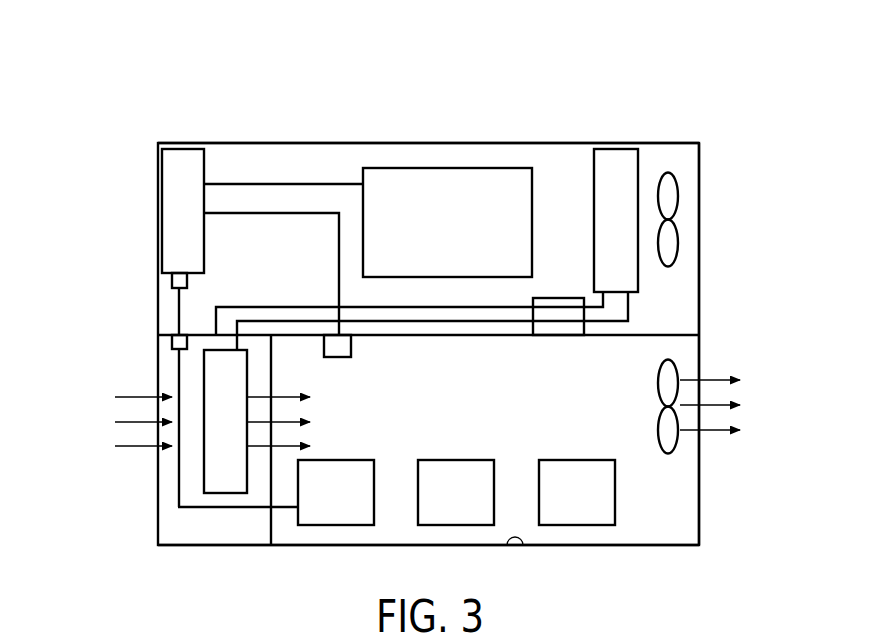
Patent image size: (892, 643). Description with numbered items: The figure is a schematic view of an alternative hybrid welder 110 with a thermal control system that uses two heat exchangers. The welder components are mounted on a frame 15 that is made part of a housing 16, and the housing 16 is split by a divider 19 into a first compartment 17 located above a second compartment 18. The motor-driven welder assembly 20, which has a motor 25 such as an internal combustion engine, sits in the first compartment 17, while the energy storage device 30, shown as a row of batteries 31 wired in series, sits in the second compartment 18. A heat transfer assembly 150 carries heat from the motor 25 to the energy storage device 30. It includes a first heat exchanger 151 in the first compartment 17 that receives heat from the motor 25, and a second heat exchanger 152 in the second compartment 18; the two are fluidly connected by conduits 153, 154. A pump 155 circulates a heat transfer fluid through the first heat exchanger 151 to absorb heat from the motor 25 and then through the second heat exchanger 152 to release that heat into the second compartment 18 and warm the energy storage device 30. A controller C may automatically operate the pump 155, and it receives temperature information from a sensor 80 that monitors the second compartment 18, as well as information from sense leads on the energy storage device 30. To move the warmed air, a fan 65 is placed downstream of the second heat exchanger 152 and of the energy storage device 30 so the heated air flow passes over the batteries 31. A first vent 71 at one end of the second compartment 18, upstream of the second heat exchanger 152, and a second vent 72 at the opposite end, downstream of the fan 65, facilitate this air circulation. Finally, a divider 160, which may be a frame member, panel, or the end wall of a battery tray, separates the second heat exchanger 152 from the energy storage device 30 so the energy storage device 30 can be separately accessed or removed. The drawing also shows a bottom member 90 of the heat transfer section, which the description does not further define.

The hybrid welder 110 is at (181, 124).
The frame 15 is at (707, 153).
The housing 16 is at (700, 190).
The first compartment 17 is at (669, 146).
The second compartment 18 is at (511, 550).
The divider 19 is at (653, 334).
The controller C is at (204, 165).
The motor-driven welder assembly 20 is at (479, 161).
The motor 25 is at (377, 176).
The first heat exchanger 151 is at (611, 166).
The conduit 153 is at (447, 306).
The conduit 154 is at (447, 323).
The pump 155 is at (571, 297).
The sensor 80 is at (343, 357).
The divider 160 is at (272, 528).
The heat transfer assembly 150 is at (196, 497).
The second heat exchanger 152 is at (212, 382).
The duct floor 90 is at (223, 508).
The first vent 71 is at (146, 456).
The second vent 72 is at (711, 372).
The fan 65 is at (674, 465).
The energy storage device 30 is at (587, 536).
The battery 31 is at (456, 492).